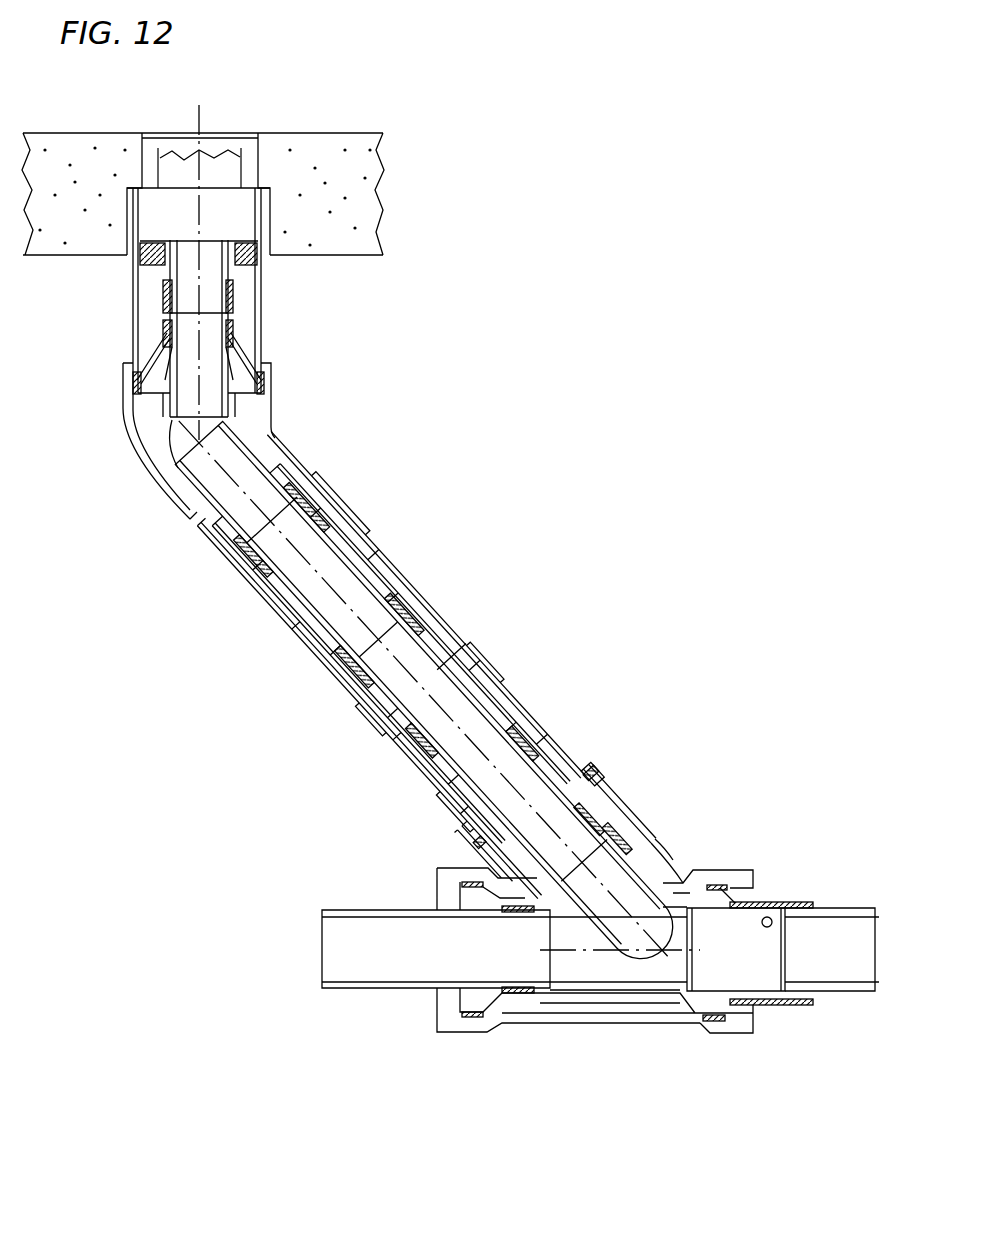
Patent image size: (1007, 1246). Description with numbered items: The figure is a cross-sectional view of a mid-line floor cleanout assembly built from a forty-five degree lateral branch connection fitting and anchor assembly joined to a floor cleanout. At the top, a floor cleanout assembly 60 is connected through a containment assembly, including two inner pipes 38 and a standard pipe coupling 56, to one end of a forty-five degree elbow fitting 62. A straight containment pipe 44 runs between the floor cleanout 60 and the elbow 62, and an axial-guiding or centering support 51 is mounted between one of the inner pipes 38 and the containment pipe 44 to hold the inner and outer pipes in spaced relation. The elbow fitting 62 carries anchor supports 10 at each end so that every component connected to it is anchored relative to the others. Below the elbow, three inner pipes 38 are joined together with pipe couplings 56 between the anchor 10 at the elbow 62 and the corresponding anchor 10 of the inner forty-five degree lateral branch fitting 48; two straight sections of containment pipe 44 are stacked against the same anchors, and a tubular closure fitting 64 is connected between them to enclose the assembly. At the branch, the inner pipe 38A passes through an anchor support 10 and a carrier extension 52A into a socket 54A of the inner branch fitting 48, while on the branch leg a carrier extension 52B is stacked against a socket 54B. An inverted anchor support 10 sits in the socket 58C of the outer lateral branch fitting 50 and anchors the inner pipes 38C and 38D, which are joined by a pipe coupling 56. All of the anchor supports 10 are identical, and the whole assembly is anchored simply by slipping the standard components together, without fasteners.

The floor cleanout assembly 60 is at (236, 126).
The axial-guiding or centering support 51 is at (150, 266).
The containment pipe 44 is at (265, 293).
The inner pipe 38 is at (178, 306).
The pipe coupling 56 is at (236, 300).
The anchor support 10 is at (116, 424).
The 45° elbow fitting 62 is at (134, 477).
The tubular closure fitting 64 is at (444, 632).
The carrier extension 52A is at (530, 912).
The socket 54A is at (534, 982).
The carrier extension 52B is at (602, 818).
The socket 54B is at (620, 842).
The outer 45° lateral branch fitting 50 is at (612, 1028).
The inner 45° lateral branch fitting 48 is at (652, 1006).
The socket 58C is at (734, 1036).
The inner pipe 38A is at (392, 988).
The inner pipe 38C is at (766, 917).
The inner pipe 38D is at (830, 908).